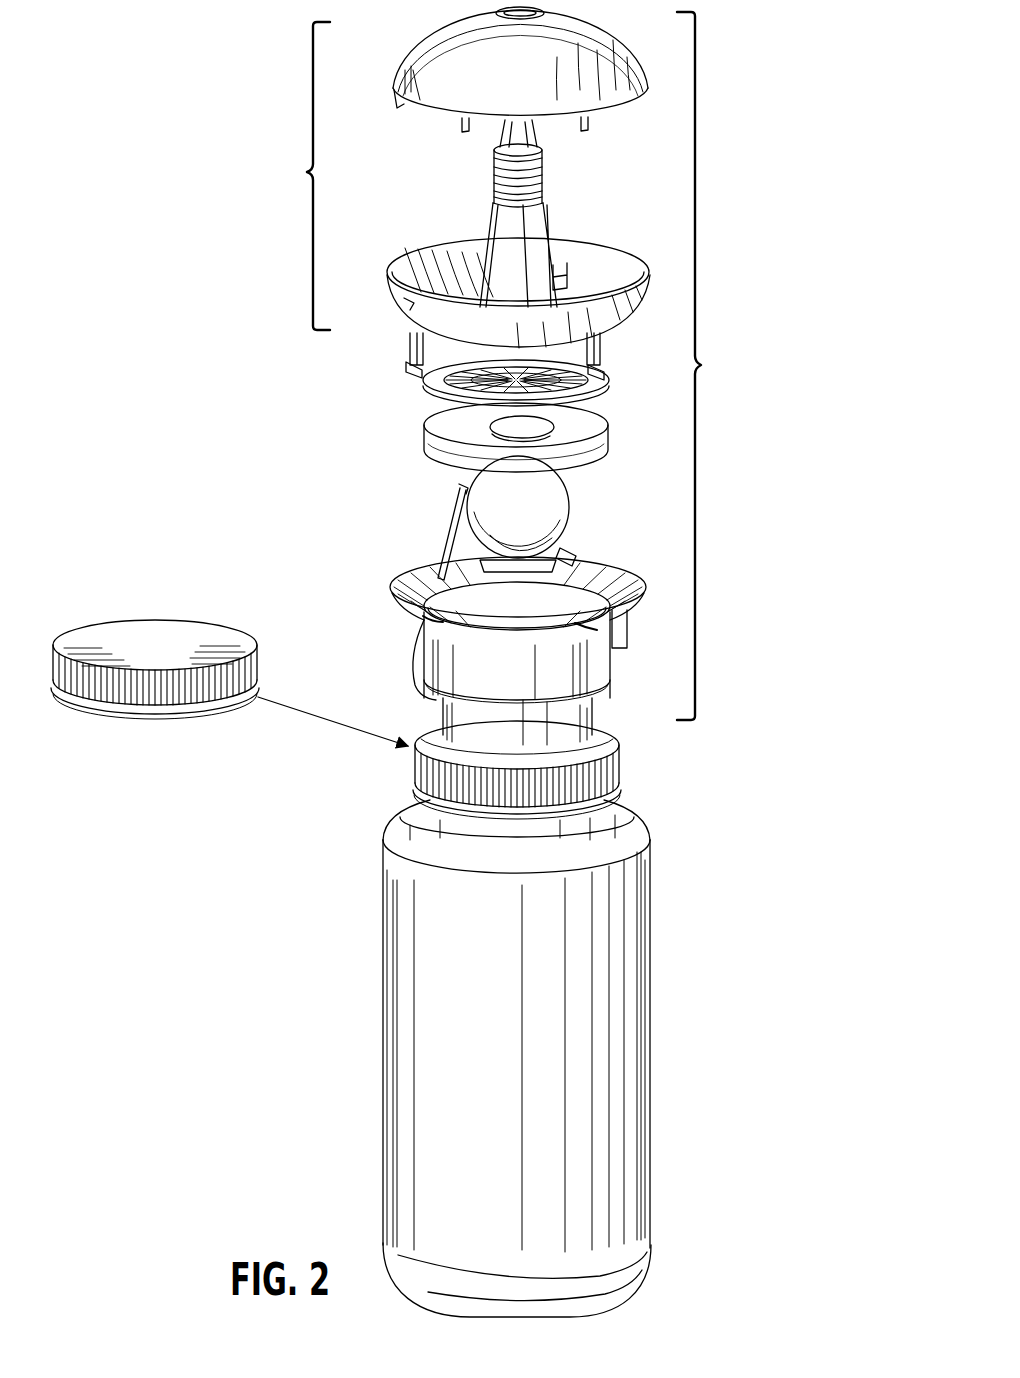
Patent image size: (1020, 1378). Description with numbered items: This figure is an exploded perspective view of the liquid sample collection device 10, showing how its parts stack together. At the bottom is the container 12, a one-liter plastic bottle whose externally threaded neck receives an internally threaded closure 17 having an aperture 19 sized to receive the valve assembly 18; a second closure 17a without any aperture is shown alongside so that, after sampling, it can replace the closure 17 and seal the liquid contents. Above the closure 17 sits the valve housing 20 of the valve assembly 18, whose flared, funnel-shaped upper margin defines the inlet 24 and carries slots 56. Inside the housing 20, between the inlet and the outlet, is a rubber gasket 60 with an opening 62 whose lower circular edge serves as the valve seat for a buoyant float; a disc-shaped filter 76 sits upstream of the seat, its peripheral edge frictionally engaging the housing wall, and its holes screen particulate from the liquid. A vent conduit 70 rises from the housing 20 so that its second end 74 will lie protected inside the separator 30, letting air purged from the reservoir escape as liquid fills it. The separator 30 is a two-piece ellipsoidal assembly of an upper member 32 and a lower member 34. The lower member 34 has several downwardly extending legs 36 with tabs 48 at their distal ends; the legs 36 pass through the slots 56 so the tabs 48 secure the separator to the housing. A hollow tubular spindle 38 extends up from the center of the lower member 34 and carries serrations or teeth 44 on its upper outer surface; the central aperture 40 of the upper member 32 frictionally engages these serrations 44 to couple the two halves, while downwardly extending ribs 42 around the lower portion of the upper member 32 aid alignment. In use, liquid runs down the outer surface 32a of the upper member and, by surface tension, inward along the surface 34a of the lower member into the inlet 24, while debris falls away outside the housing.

The liquid sample collection device 10 is at (798, 63).
The container 12 is at (652, 990).
The closure 17 is at (614, 770).
The closure 17a is at (157, 624).
The valve assembly 18 is at (701, 365).
The aperture 19 is at (482, 760).
The valve housing 20 is at (618, 676).
The inlet 24 is at (603, 578).
The separator 30 is at (307, 172).
The upper member 32 is at (404, 46).
The outer surface 32a is at (402, 76).
The lower member 34 is at (622, 258).
The surface 34a is at (414, 303).
The legs 36 is at (410, 342).
The spindle 38 is at (532, 222).
The central aperture 40 is at (515, 20).
The ribs 42 is at (400, 106).
The serrations or teeth 44 is at (492, 188).
The tabs 48 is at (406, 368).
The slots 56 is at (572, 556).
The gasket 60 is at (640, 405).
The opening 62 is at (452, 432).
The conduit 70 is at (450, 534).
The second end 74 is at (458, 490).
The filter 76 is at (440, 386).